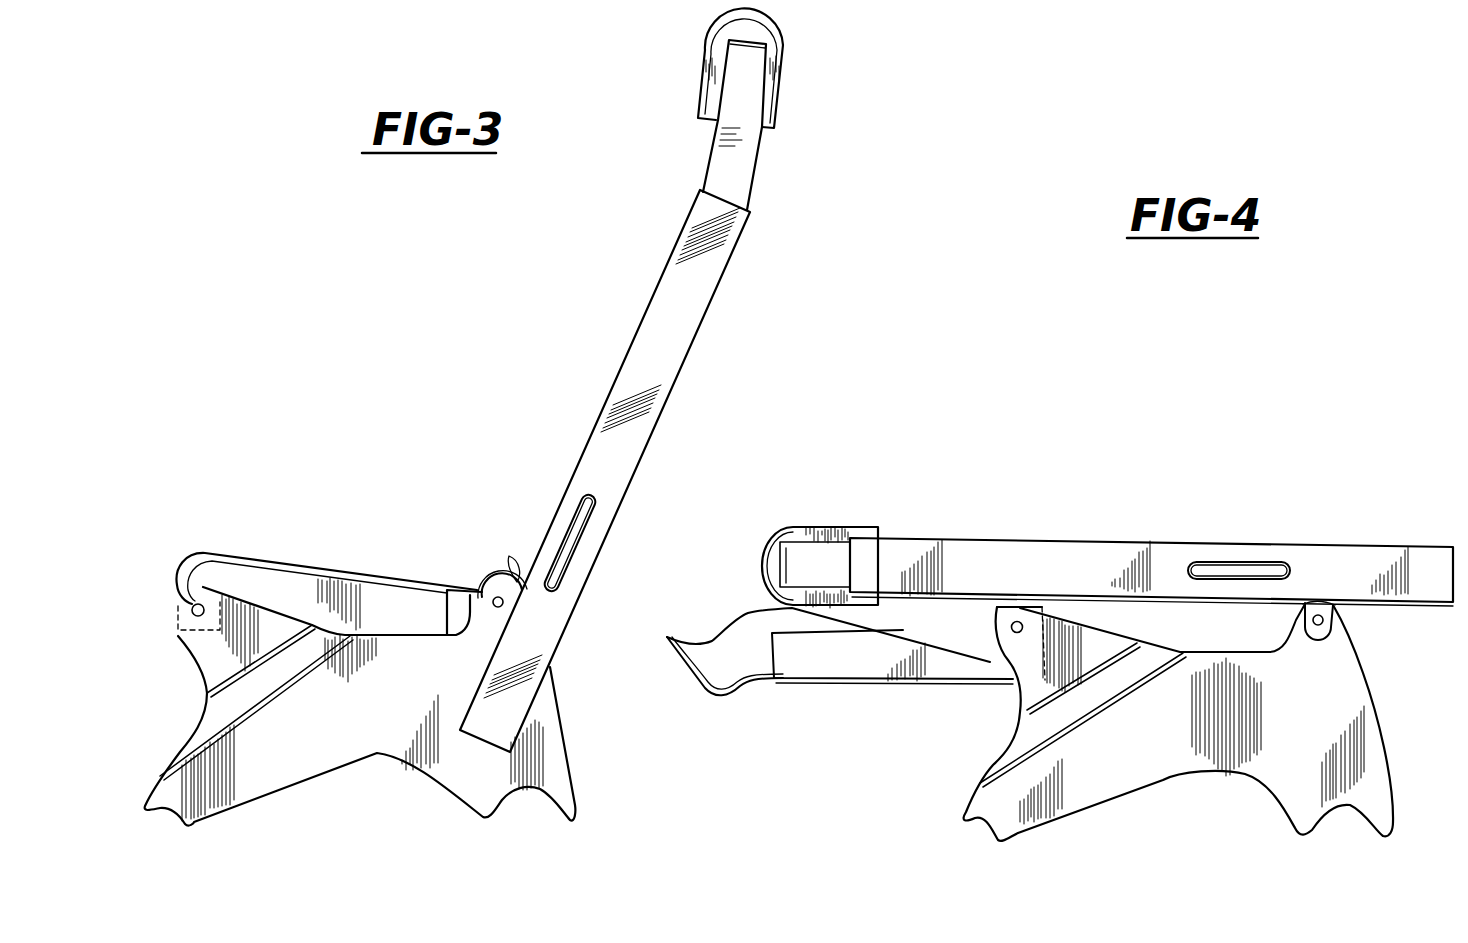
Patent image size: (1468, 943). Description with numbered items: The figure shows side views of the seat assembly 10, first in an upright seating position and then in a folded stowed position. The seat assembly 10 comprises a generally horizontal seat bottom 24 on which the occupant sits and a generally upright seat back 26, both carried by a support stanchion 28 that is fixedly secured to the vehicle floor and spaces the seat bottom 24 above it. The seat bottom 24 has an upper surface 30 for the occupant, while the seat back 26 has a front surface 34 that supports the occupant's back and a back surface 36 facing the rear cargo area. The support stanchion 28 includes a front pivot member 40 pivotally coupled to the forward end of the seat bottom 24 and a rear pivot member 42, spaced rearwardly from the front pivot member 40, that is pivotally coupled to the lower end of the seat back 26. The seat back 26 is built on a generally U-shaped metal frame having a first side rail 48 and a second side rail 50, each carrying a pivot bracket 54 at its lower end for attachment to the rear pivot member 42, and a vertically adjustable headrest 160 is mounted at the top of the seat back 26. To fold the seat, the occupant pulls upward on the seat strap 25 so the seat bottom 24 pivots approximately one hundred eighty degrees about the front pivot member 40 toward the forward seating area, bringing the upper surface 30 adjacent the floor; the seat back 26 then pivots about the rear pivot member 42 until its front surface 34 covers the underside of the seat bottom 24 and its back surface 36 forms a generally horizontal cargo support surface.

In FIG. 3, the seat assembly 10 is at (461, 365).
In FIG. 4, the seat assembly 10 is at (1248, 383).
In FIG. 3, the seat bottom portion 24 is at (270, 560).
In FIG. 4, the seat bottom portion 24 is at (820, 707).
In FIG. 3, the seat strap 25 is at (520, 567).
In FIG. 3, the seat back portion 26 is at (664, 396).
In FIG. 4, the seat back portion 26 is at (1107, 530).
In FIG. 3, the support stanchion 28 is at (303, 758).
In FIG. 4, the support stanchion 28 is at (1143, 767).
In FIG. 3, the upper surface 30 is at (363, 573).
In FIG. 4, the upper surface 30 is at (918, 688).
In FIG. 3, the front surface 34 is at (625, 355).
In FIG. 3, the back surface 36 is at (642, 457).
In FIG. 4, the back surface 36 is at (1223, 540).
In FIG. 3, the front pivot member 40 is at (195, 606).
In FIG. 4, the front pivot member 40 is at (1030, 627).
In FIG. 3, the rear pivot member 42 is at (505, 602).
In FIG. 4, the rear pivot member 42 is at (1318, 621).
In FIG. 3, the first side rail 48 is at (758, 274).
In FIG. 4, the first side rail 48 is at (1004, 524).
In FIG. 3, the second side rail 50 is at (715, 282).
In FIG. 4, the second side rail 50 is at (1028, 553).
In FIG. 3, the pivot bracket 54 is at (480, 580).
In FIG. 4, the pivot bracket 54 is at (1333, 613).
In FIG. 3, the headrest 160 is at (790, 48).